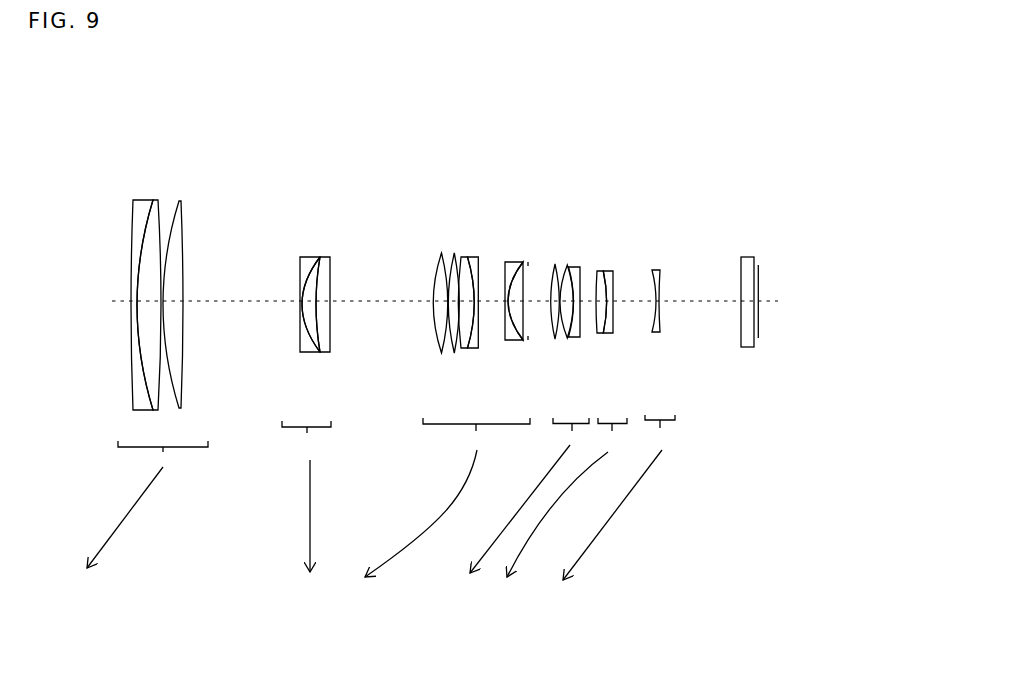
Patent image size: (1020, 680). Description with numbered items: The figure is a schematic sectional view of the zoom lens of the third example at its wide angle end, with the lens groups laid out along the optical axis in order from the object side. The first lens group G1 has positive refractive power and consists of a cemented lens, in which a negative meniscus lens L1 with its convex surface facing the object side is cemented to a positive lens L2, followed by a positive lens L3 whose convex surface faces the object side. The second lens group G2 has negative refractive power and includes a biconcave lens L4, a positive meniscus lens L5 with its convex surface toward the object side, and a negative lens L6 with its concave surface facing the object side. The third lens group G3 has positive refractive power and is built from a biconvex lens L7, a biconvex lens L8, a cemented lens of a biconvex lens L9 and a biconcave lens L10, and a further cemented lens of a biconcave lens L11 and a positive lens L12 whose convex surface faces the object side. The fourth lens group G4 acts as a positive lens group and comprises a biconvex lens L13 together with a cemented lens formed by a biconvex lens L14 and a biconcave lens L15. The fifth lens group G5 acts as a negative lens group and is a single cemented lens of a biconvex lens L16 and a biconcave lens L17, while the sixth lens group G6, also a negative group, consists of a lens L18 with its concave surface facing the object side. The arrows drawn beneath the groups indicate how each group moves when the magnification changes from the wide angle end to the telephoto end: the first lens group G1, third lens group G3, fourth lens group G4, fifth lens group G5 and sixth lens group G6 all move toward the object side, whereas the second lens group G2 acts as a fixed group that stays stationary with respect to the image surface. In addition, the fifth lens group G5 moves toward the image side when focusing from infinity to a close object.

The first lens group G1 is at (118, 163).
The second lens group G2 is at (278, 195).
The third lens group G3 is at (415, 193).
The fourth lens group G4 is at (542, 191).
The fifth lens group G5 is at (610, 191).
The sixth lens group G6 is at (665, 191).
The meniscus lens L1 is at (138, 293).
The lens L2 is at (151, 293).
The lens L3 is at (180, 292).
The biconcave lens L4 is at (297, 279).
The meniscus lens L5 is at (310, 279).
The lens L6 is at (327, 279).
The biconvex lens L7 is at (429, 278).
The biconvex lens L8 is at (444, 278).
The biconvex lens L9 is at (461, 275).
The biconcave lens L10 is at (473, 275).
The biconcave lens L11 is at (504, 271).
The lens L12 is at (517, 271).
The biconvex lens L13 is at (547, 270).
The biconvex lens L14 is at (566, 270).
The biconcave lens L15 is at (585, 269).
The biconvex lens L16 is at (614, 267).
The biconcave lens L17 is at (630, 267).
The lens L18 is at (670, 267).